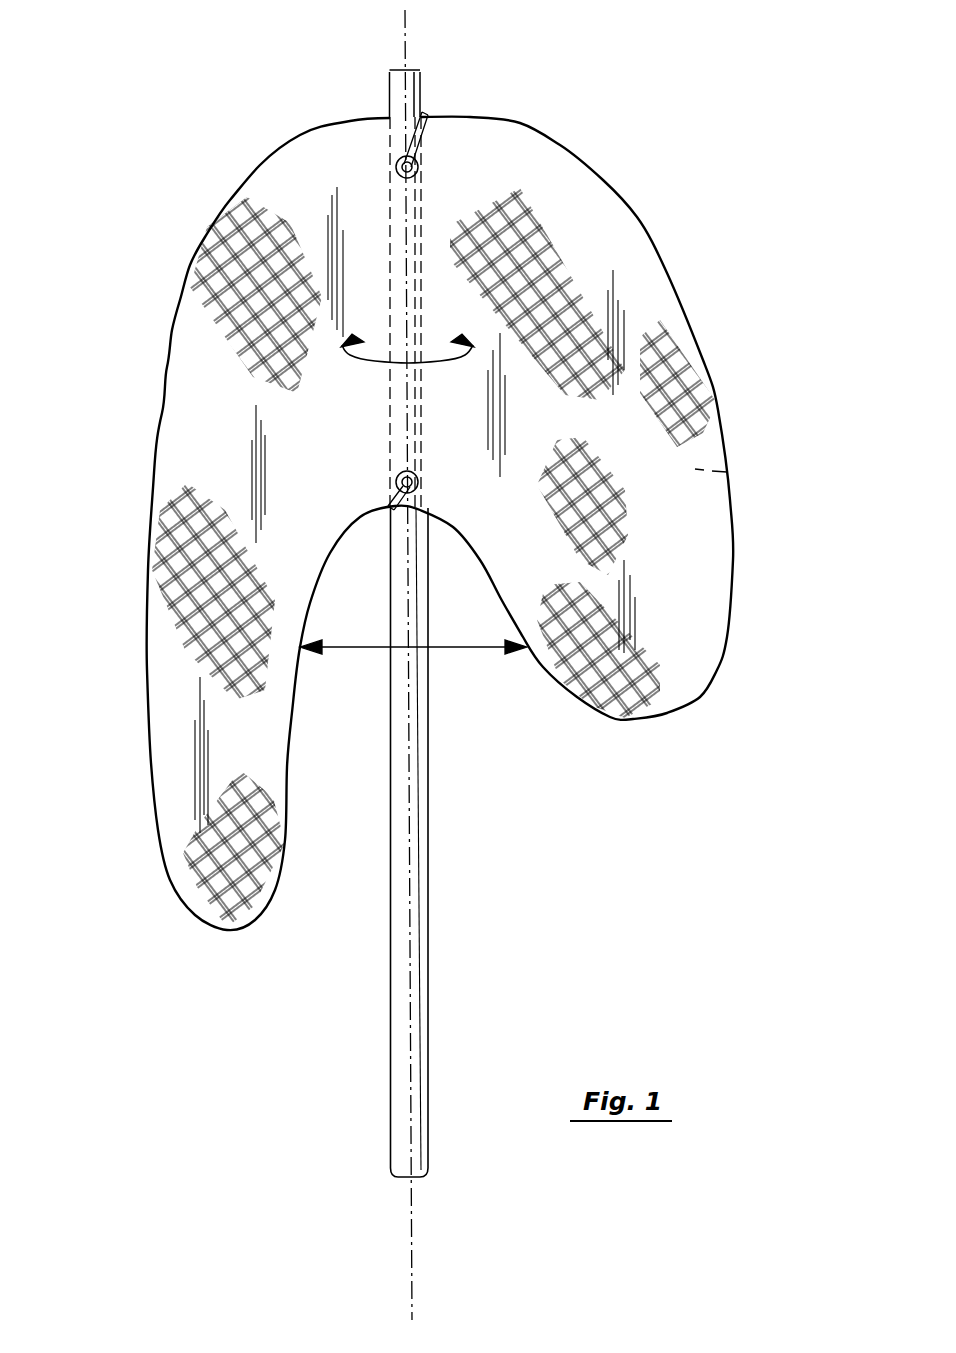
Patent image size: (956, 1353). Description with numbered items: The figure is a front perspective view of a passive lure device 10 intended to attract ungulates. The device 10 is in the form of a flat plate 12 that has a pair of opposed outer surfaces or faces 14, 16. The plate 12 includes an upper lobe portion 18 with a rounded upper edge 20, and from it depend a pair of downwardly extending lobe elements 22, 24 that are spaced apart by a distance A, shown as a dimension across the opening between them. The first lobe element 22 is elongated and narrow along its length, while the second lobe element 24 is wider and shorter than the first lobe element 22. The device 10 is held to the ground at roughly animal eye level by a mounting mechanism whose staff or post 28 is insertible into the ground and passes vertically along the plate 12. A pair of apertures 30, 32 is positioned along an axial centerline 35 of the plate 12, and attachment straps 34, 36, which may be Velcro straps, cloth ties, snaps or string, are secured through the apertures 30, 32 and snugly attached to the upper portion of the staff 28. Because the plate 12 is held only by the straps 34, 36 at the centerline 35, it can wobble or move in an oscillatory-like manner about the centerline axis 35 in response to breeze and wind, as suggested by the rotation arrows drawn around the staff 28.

The passive lure device 10 is at (617, 168).
The flat plate 12 is at (610, 250).
The outer surface 14 is at (663, 440).
The outer surface 16 is at (683, 465).
The upper lobe portion 18 is at (520, 213).
The rounded upper edge 20 is at (318, 132).
The first lobe element 22 is at (210, 752).
The second lobe element 24 is at (645, 582).
The staff 28 is at (413, 868).
The aperture 30 is at (418, 168).
The aperture 32 is at (420, 480).
The attachment strap 34 is at (425, 114).
The axial centerline 35 is at (405, 58).
The attachment strap 36 is at (392, 502).
The distance A is at (440, 647).